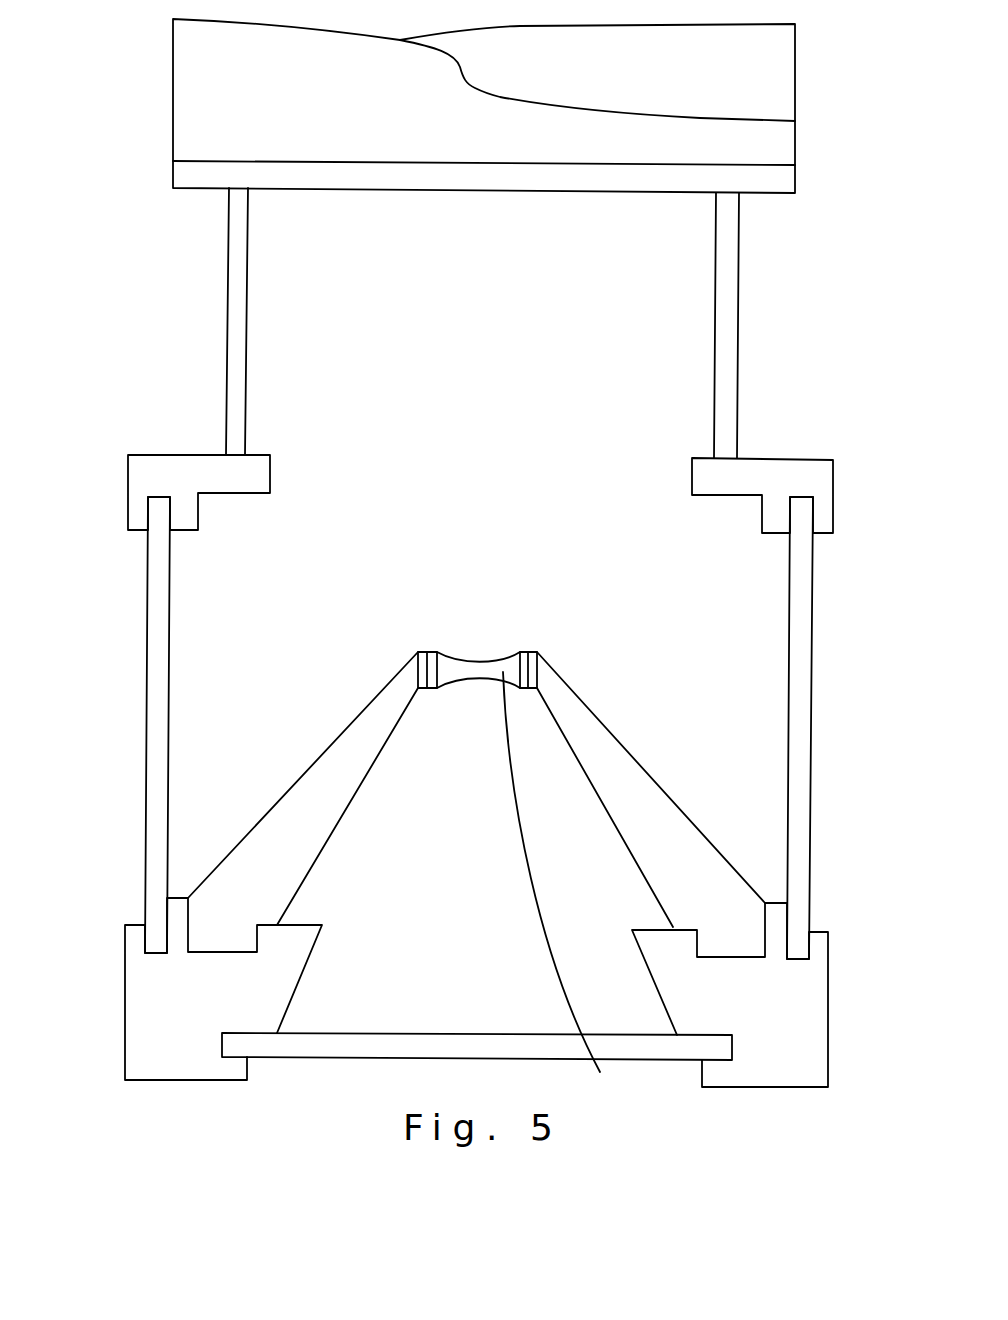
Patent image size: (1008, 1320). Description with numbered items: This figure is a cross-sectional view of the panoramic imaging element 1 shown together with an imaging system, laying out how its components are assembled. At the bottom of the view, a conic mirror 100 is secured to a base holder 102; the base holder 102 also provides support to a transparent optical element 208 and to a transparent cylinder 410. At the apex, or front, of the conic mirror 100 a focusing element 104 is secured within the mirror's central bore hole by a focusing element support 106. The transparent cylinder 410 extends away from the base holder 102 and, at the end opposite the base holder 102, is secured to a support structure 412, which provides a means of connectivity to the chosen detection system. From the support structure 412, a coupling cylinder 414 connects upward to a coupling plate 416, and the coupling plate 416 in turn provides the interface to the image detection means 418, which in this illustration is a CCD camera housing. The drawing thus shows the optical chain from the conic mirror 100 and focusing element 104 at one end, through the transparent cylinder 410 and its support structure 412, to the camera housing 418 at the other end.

The optical fiber device 1 is at (343, 712).
The conic mirror 100 is at (273, 838).
The base holder 102 is at (142, 982).
The focusing element 104 is at (567, 887).
The focusing element support 106 is at (527, 665).
The transparent optical element 208 is at (337, 1048).
The transparent cylinder 410 is at (157, 741).
The support structure 412 is at (158, 468).
The coupling cylinder 414 is at (236, 279).
The coupling plate 416 is at (212, 177).
The image detection means 418 is at (238, 80).